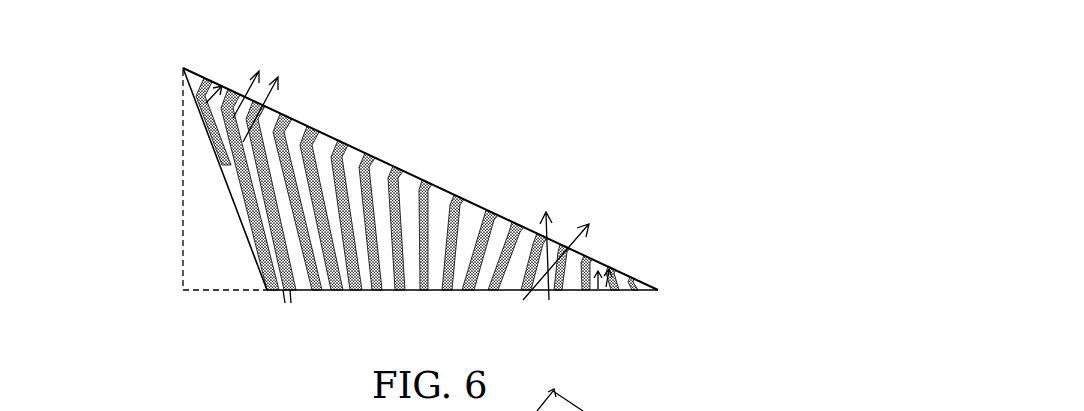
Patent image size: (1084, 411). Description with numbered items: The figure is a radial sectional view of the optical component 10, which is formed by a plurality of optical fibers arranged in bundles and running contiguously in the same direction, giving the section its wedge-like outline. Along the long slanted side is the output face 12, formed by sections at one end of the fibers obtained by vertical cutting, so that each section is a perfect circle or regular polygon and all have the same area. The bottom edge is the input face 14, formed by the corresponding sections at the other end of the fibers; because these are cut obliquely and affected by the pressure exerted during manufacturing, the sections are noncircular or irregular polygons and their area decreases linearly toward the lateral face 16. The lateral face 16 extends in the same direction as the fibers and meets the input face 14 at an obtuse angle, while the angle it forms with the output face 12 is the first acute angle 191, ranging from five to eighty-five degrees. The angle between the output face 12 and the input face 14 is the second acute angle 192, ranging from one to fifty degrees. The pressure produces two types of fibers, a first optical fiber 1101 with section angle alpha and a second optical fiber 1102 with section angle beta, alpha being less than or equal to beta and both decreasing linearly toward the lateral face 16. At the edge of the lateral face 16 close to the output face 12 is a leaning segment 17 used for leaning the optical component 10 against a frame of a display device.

The optical component 10 is at (174, 25).
The output face 12 is at (443, 189).
The input face 14 is at (435, 291).
The lateral face 16 is at (217, 157).
The leaning segment 17 is at (260, 277).
The first acute angle 191 is at (180, 82).
The second acute angle 192 is at (640, 279).
The first optical fiber 1101 is at (273, 123).
The second optical fiber 1102 is at (523, 243).